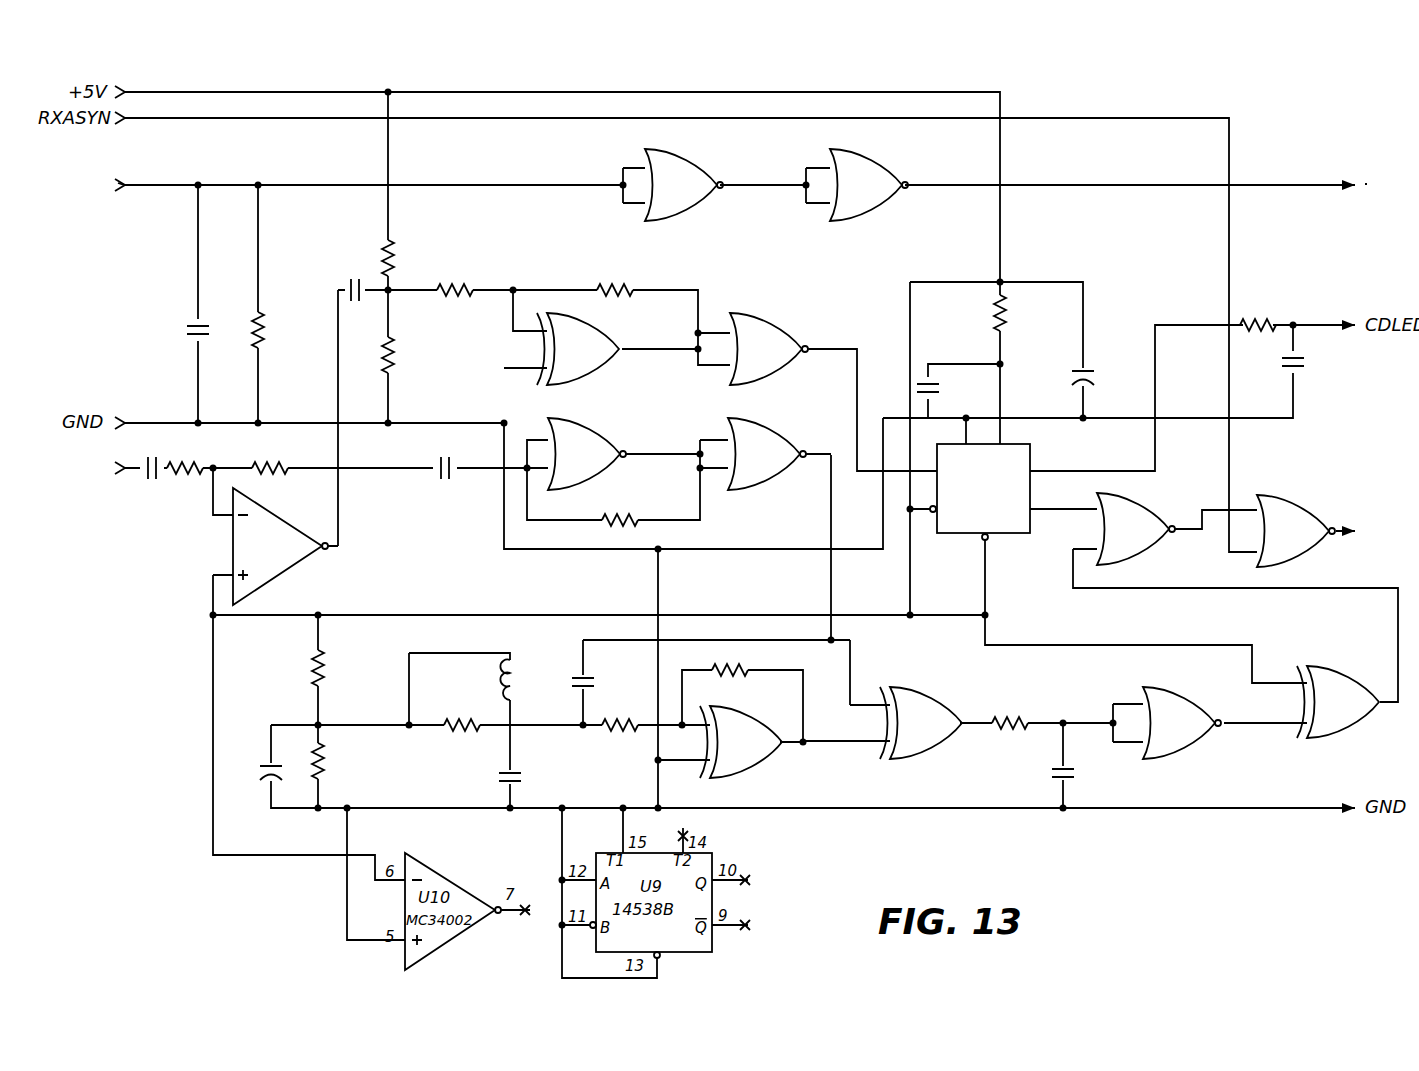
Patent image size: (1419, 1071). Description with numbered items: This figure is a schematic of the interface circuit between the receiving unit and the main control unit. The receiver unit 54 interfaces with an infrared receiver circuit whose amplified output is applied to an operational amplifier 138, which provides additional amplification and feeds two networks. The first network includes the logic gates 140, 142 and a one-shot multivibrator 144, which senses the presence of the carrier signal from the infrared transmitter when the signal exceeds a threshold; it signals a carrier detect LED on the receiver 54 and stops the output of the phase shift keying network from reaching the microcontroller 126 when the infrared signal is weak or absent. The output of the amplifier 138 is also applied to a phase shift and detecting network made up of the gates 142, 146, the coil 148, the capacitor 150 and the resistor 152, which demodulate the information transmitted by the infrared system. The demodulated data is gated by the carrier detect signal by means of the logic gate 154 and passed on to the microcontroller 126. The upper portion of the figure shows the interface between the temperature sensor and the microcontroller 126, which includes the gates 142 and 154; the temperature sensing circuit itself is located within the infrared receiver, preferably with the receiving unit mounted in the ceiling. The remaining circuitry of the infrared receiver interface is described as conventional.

The receiver unit 54 is at (80, 331).
The microcontroller 126 is at (1386, 357).
The operational amplifier 138 is at (292, 568).
The logic gate 140 is at (600, 330).
The logic gates 142 is at (700, 170).
The one-shot multivibrator 144 is at (1003, 549).
The logic gates 146 is at (1340, 668).
The coil 148 is at (500, 676).
The capacitor 150 is at (520, 775).
The resistor 152 is at (452, 733).
The logic gate 154 is at (868, 168).